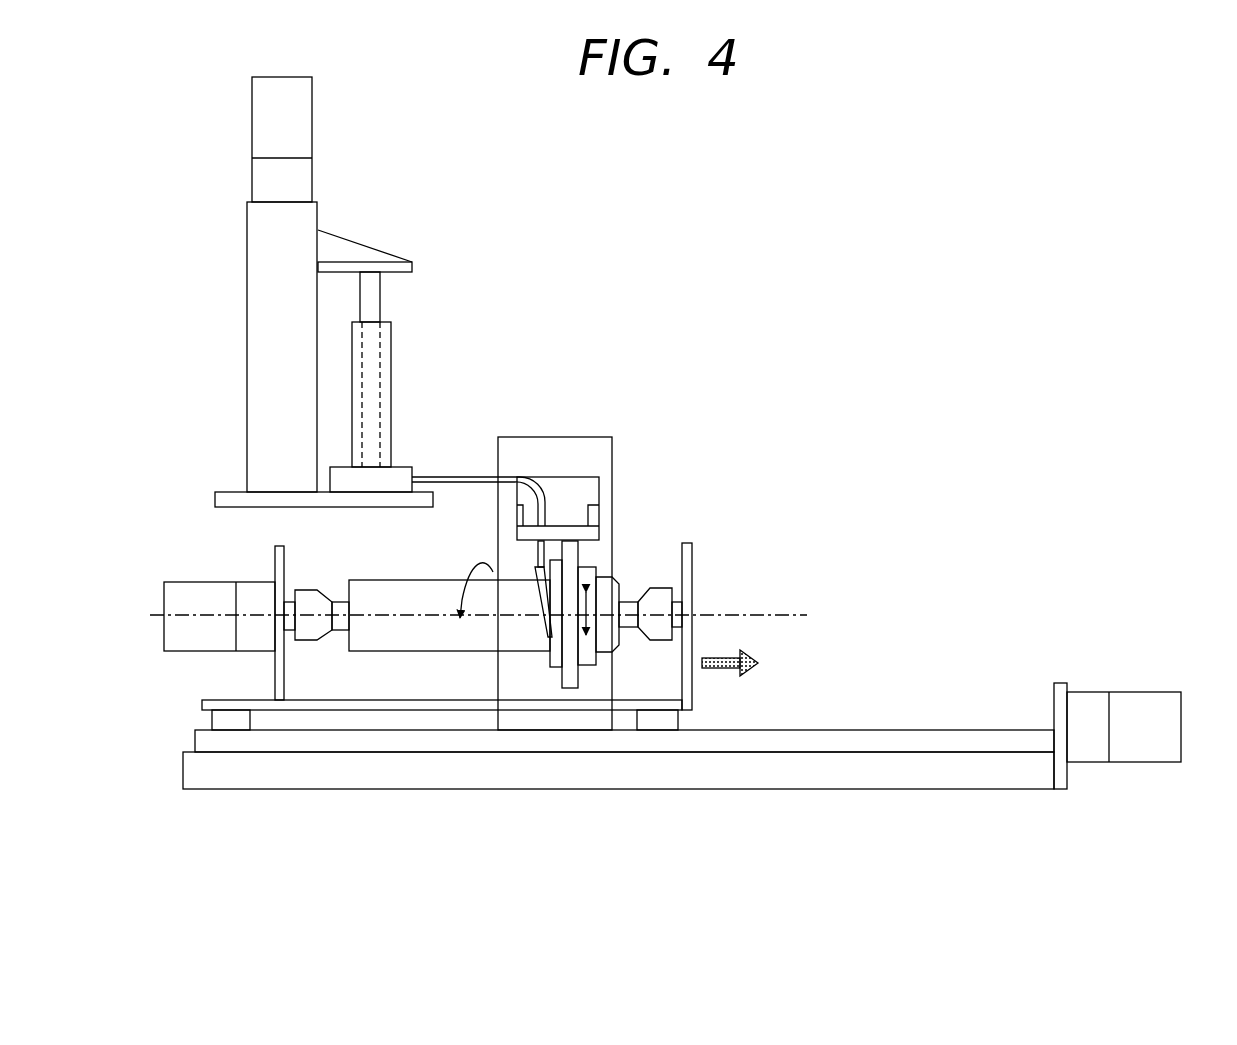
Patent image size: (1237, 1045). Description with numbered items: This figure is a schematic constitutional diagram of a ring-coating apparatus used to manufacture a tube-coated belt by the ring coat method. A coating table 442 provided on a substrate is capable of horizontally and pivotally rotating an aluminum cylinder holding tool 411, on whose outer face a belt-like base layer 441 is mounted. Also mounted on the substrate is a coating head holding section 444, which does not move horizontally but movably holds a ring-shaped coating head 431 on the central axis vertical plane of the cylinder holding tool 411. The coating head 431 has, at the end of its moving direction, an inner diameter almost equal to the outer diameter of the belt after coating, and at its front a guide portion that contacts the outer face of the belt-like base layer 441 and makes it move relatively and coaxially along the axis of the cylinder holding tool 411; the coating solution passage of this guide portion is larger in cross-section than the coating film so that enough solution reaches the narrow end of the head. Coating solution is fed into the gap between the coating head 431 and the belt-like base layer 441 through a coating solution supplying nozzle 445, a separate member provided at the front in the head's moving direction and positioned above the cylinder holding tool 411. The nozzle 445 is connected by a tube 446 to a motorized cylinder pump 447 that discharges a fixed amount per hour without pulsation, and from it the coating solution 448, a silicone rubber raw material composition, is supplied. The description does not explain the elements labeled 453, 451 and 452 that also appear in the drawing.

The drive unit 453 is at (302, 108).
The motorized cylinder pump 447 is at (378, 358).
The tube 446 is at (447, 477).
The coating solution supplying nozzle 445 is at (547, 567).
The aluminum cylinder holding tool 411 is at (630, 597).
The feed motor 451 is at (1092, 692).
The rotation motor 452 is at (192, 633).
The coating table 442 is at (345, 708).
The belt-like base layer 441 is at (453, 645).
The coating solution 448 is at (540, 590).
The ring-shaped coating head 431 is at (572, 643).
The coating head holding section 444 is at (578, 643).